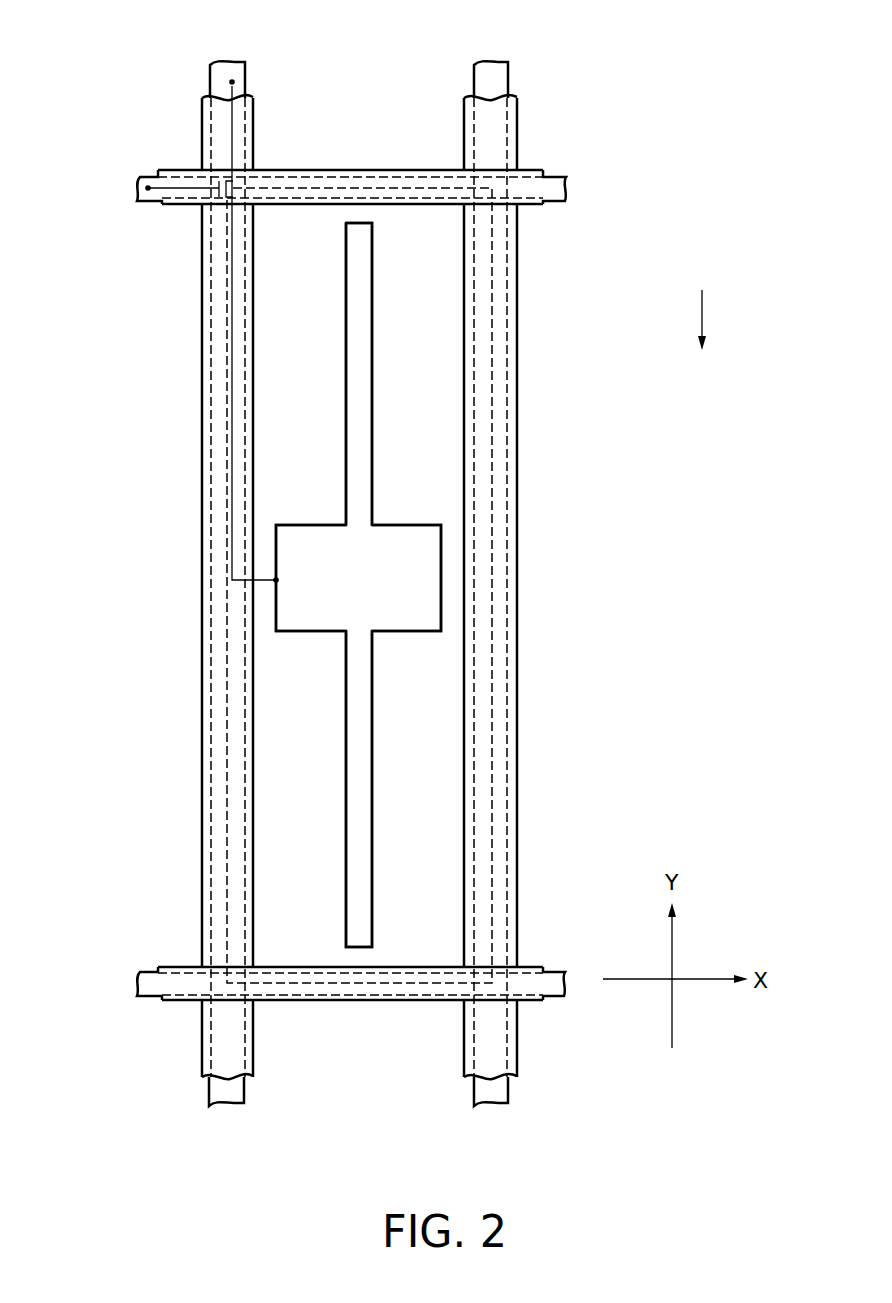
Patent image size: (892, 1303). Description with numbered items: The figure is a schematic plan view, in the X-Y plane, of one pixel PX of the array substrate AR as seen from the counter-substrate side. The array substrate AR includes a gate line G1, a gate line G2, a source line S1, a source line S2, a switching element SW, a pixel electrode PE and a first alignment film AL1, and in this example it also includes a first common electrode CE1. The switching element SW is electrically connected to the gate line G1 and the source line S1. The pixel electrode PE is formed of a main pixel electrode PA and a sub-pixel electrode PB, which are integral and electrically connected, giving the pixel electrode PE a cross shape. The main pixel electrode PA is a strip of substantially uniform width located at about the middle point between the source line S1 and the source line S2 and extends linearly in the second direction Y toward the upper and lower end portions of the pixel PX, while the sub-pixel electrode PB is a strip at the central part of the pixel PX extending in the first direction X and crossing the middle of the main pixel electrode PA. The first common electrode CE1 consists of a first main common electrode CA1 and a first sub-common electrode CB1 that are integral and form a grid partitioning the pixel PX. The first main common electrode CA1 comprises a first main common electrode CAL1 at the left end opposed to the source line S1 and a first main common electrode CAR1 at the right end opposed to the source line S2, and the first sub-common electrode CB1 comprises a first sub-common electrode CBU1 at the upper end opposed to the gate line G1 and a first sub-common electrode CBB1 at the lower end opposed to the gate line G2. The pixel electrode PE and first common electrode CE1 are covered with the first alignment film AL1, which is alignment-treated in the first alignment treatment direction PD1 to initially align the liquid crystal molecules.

The source line S1 is at (221, 75).
The source line S2 is at (485, 75).
The gate line G1 is at (135, 191).
The gate line G2 is at (138, 984).
The first sub-common electrode CBU1 is at (364, 168).
The first sub-common electrode CBB1 is at (365, 1003).
The first sub-common electrode CB1 is at (350, 586).
The first main common electrode CAL1 is at (201, 922).
The first main common electrode CAR1 is at (518, 792).
The first main common electrode CA1 is at (360, 587).
The first common electrode CE1 is at (266, 1070).
The pixel PX is at (502, 179).
The switching element SW is at (214, 217).
The pixel electrode PE is at (358, 582).
The main pixel electrode PA is at (372, 361).
The sub-pixel electrode PB is at (422, 618).
The array substrate AR is at (648, 166).
The first alignment treatment direction PD1 is at (702, 314).
The first alignment film AL1 is at (766, 320).